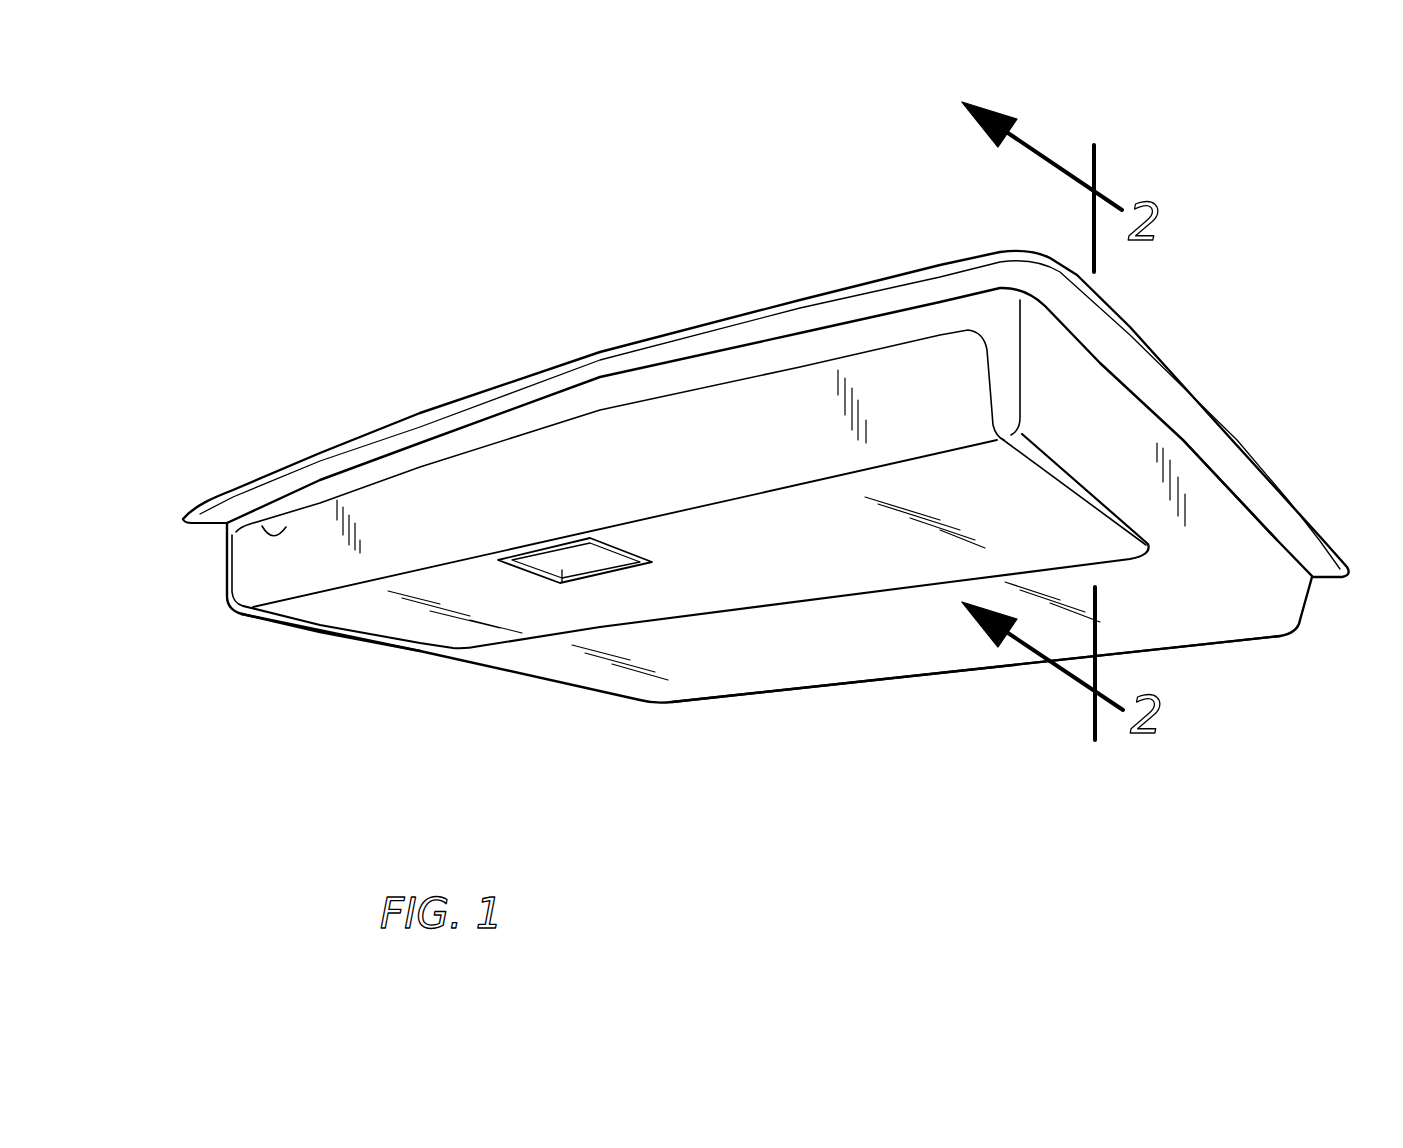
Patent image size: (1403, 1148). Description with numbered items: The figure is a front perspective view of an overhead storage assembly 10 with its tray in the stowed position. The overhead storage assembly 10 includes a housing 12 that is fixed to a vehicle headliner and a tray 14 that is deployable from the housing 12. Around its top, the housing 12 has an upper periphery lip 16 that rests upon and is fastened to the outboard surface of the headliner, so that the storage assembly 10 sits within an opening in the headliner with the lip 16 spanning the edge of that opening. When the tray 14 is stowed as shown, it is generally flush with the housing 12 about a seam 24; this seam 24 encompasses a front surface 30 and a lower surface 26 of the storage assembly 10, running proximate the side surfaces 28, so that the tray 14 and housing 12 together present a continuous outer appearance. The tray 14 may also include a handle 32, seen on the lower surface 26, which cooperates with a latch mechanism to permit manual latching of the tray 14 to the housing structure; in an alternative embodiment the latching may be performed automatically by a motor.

The overhead storage assembly 10 is at (305, 187).
The housing 12 is at (1257, 573).
The tray 14 is at (773, 557).
The upper periphery lip 16 is at (1145, 366).
The seam 24 is at (284, 524).
The lower surface 26 is at (880, 690).
The side surfaces 28 is at (352, 637).
The front surface 30 is at (533, 474).
The handle 32 is at (552, 560).